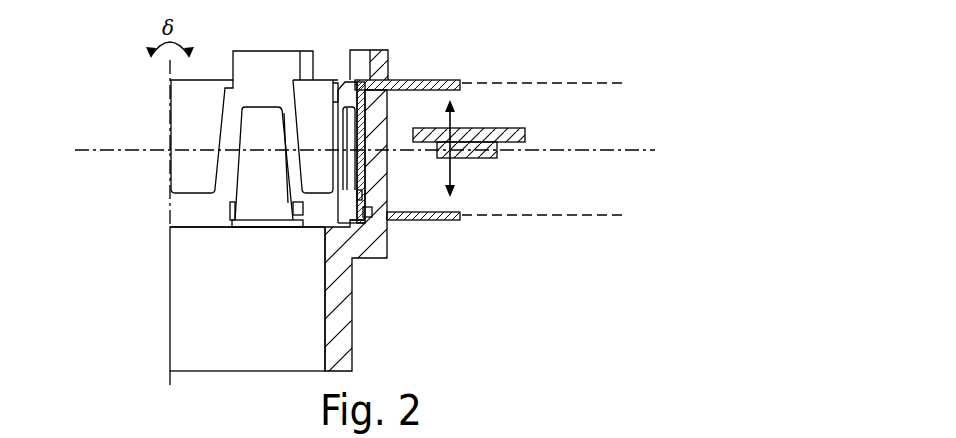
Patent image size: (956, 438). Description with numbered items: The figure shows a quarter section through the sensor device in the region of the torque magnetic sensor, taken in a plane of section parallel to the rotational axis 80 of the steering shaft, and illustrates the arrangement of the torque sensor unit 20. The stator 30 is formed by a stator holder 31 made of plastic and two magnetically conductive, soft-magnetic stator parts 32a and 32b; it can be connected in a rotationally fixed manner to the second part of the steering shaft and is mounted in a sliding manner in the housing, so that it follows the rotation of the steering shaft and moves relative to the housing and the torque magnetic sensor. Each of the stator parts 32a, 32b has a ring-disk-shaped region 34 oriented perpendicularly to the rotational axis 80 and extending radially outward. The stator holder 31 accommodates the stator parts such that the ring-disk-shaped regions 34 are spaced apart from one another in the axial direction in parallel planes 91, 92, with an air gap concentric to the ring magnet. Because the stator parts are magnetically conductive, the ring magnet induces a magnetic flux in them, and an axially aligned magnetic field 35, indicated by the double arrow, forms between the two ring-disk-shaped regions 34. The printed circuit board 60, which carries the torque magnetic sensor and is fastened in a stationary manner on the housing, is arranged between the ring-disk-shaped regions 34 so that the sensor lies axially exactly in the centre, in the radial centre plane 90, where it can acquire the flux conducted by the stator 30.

The torque sensor unit 20 is at (477, 172).
The stator 30 is at (142, 122).
The stator holder 31 is at (340, 353).
The stator part 32a is at (360, 230).
The stator part 32b is at (360, 100).
The ring-disk-shaped region 34 is at (413, 82).
The axially aligned magnetic field 35 is at (453, 115).
The printed circuit board 60 is at (512, 137).
The rotational axis 80 is at (170, 313).
The radial centre plane 90 is at (617, 148).
The parallel plane 91 is at (590, 82).
The parallel plane 92 is at (567, 217).